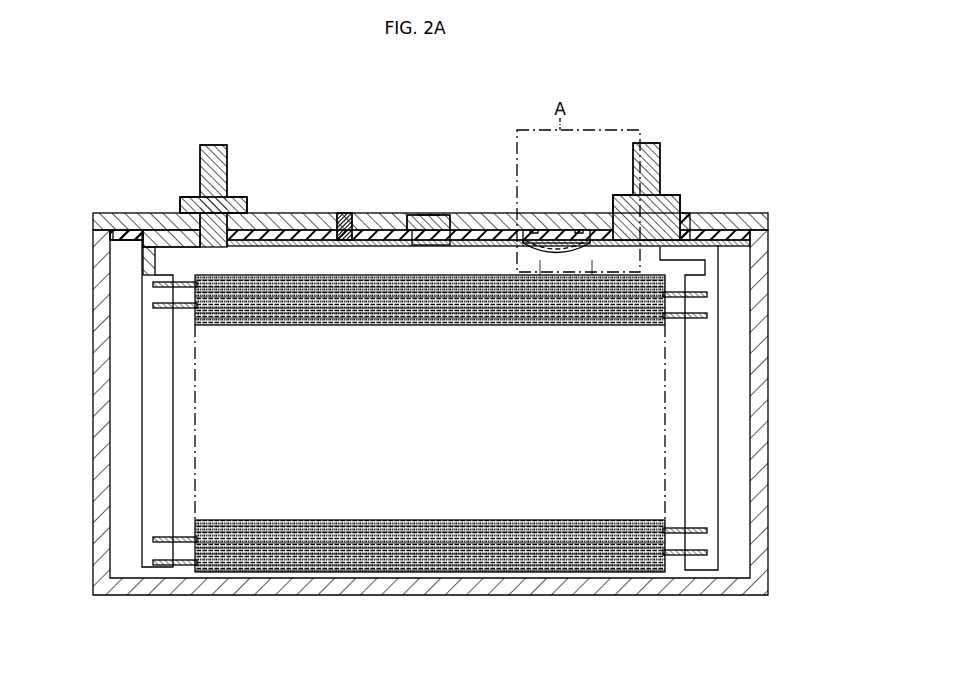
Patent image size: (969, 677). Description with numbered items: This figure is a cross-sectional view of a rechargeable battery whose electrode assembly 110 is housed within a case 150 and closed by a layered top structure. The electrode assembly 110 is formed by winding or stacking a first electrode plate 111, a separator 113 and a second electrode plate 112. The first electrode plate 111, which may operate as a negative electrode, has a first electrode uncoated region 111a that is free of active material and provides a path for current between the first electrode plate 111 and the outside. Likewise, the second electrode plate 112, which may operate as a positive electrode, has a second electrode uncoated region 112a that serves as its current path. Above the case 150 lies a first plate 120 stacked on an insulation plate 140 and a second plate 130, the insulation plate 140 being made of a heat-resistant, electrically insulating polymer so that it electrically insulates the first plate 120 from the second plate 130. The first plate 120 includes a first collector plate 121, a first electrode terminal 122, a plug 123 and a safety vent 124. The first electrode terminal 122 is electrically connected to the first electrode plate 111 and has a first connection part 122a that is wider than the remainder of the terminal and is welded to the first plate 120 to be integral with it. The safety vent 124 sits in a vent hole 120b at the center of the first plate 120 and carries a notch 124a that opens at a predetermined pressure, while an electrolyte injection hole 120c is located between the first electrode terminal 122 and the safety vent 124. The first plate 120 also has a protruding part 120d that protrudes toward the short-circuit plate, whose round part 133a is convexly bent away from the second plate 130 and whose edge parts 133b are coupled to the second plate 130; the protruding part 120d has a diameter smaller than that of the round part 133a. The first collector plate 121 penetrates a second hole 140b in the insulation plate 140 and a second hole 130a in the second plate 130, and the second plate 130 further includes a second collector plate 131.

The electrode assembly 110 is at (430, 463).
The first electrode plate 111 is at (305, 572).
The first electrode uncoated region 111a is at (187, 566).
The second electrode plate 112 is at (587, 572).
The second electrode uncoated region 112a is at (670, 556).
The separator 113 is at (455, 574).
The first plate 120 is at (258, 213).
The vent hole 120b is at (440, 241).
The electrolyte injection hole 120c is at (345, 240).
The protruding part 120d is at (556, 242).
The first collector plate 121 is at (136, 398).
The first electrode terminal 122 is at (214, 145).
The first connection part 122a is at (236, 198).
The plug 123 is at (345, 214).
The safety vent 124 is at (452, 216).
The notch 124a is at (427, 214).
The second plate 130 is at (648, 143).
The second hole 130a is at (671, 197).
The second collector plate 131 is at (724, 327).
The round part 133a is at (545, 257).
The edge parts 133b is at (590, 257).
The insulation plate 140 is at (305, 233).
The second hole 140b is at (690, 213).
The case 150 is at (762, 428).